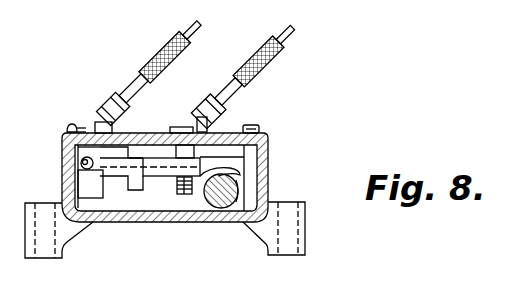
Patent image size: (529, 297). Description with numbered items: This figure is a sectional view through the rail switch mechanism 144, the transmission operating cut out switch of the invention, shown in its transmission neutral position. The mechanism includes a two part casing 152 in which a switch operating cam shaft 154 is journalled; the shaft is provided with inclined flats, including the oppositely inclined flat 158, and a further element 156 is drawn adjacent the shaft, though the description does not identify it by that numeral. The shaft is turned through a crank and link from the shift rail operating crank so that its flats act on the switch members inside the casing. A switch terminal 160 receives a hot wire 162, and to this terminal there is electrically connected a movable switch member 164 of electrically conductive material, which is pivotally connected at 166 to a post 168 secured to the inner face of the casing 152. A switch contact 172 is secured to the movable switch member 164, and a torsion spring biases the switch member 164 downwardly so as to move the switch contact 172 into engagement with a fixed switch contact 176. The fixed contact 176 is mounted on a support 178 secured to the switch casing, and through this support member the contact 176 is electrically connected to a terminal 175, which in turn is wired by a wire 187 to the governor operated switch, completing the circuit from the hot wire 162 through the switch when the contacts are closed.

The rail switch mechanism 144 is at (282, 112).
The two part casing 152 is at (148, 220).
The switch operating cam shaft 154 is at (262, 190).
The cylindrical member 156 is at (242, 186).
The oppositely inclined flat 158 is at (240, 172).
The switch terminal 160 is at (100, 105).
The hot wire 162 is at (158, 48).
The movable switch member 164 is at (128, 157).
The pivotal connection 166 is at (64, 178).
The post 168 is at (95, 194).
The switch contact 172 is at (175, 184).
The terminal 175 is at (213, 94).
The fixed switch contact 176 is at (203, 186).
The support 178 is at (185, 196).
The wire 187 is at (282, 54).